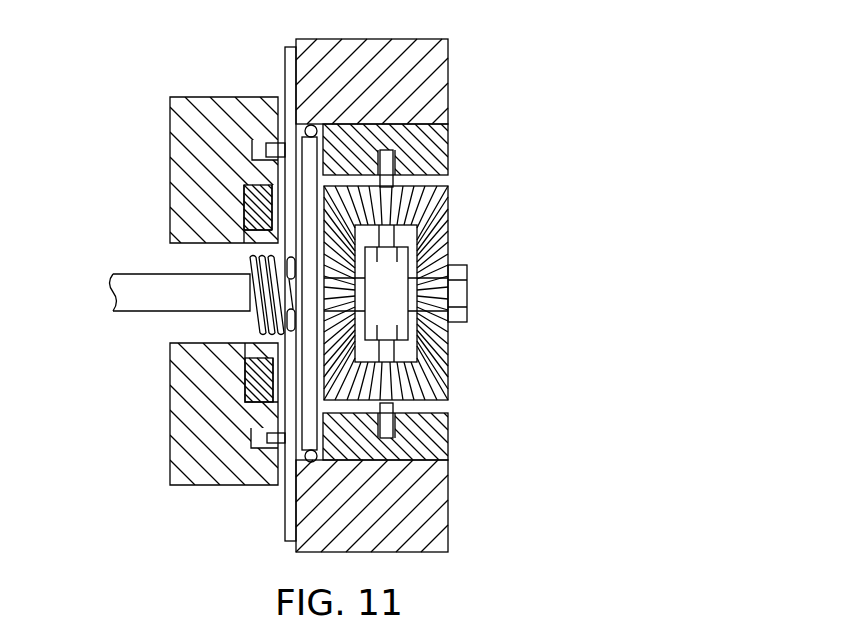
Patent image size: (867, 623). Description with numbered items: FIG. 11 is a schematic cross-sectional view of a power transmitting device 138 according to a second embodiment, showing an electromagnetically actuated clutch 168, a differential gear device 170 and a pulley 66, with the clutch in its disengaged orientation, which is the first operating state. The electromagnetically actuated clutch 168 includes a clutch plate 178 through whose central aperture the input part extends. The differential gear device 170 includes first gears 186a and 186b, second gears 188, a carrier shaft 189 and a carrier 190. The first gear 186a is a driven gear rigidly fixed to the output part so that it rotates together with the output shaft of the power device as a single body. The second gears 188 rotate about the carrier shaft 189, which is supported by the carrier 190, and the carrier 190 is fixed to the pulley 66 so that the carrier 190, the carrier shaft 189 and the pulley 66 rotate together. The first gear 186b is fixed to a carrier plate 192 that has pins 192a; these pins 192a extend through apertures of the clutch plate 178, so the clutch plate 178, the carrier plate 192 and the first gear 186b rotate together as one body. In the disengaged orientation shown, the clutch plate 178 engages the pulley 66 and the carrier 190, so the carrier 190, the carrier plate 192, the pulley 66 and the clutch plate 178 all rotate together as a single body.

The power transmitting device 138 is at (232, 48).
The pulley 66 is at (413, 73).
The electromagnetically actuated clutch 168 is at (208, 132).
The differential gear device 170 is at (455, 209).
The clutch plate 178 is at (288, 530).
The first gear 186a is at (432, 268).
The first gear 186b is at (337, 347).
The second gears 188 is at (417, 197).
The carrier shaft 189 is at (383, 152).
The carrier 190 is at (415, 146).
The carrier plate 192 is at (347, 462).
The pins 192a is at (280, 435).